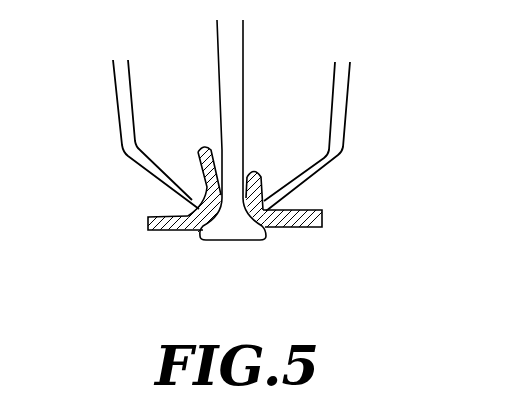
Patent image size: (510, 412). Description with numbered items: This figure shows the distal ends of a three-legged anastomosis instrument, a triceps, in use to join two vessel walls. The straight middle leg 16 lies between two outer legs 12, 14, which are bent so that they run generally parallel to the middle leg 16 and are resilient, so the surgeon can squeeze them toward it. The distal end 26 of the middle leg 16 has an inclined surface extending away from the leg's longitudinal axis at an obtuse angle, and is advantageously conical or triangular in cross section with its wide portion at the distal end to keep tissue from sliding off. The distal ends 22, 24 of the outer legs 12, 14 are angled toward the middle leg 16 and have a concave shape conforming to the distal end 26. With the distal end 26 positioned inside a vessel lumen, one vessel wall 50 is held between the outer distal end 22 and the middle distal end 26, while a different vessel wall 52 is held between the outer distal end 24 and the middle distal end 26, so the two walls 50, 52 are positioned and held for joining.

The outer leg 12 is at (123, 88).
The outer leg 14 is at (341, 102).
The middle leg 16 is at (243, 70).
The distal end of outer leg 22 is at (197, 207).
The distal end of outer leg 24 is at (270, 200).
The distal end of middle leg 26 is at (237, 232).
The vessel wall 50 is at (172, 227).
The vessel wall 52 is at (322, 227).